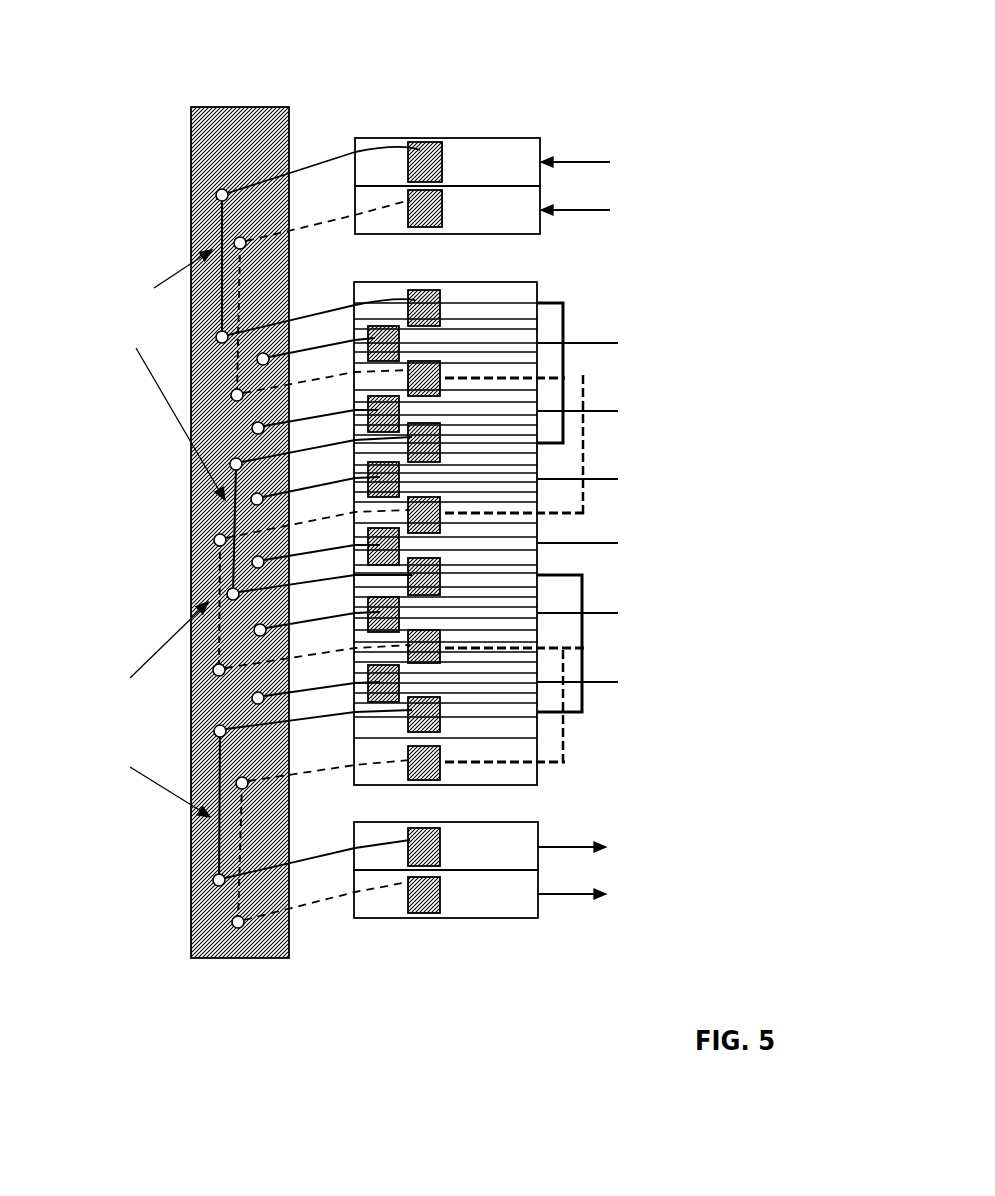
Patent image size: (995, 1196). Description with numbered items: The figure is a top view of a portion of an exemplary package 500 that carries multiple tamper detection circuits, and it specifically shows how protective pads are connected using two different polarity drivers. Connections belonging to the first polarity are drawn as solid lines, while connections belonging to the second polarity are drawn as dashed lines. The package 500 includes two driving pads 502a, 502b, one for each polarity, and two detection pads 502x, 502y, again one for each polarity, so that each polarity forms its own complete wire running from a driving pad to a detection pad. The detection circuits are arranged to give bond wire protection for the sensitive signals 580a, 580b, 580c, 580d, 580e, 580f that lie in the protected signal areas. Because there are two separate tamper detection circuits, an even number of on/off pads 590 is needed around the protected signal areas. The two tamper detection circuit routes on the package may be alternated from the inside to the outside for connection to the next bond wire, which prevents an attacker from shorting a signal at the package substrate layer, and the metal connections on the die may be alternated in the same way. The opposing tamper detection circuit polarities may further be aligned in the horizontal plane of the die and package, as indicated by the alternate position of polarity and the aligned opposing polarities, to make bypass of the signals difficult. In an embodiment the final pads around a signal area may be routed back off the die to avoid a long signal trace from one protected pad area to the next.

The package 500 is at (745, 33).
The driving pad 502a is at (512, 144).
The driving pad 502b is at (518, 222).
The detection pad 502x is at (520, 835).
The detection pad 502y is at (527, 908).
The sensitive signal 580a is at (598, 331).
The sensitive signal 580b is at (605, 397).
The sensitive signal 580c is at (603, 469).
The sensitive signal 580d is at (594, 536).
The sensitive signal 580e is at (605, 599).
The sensitive signal 580f is at (601, 670).
The on/off pads 590 is at (615, 683).